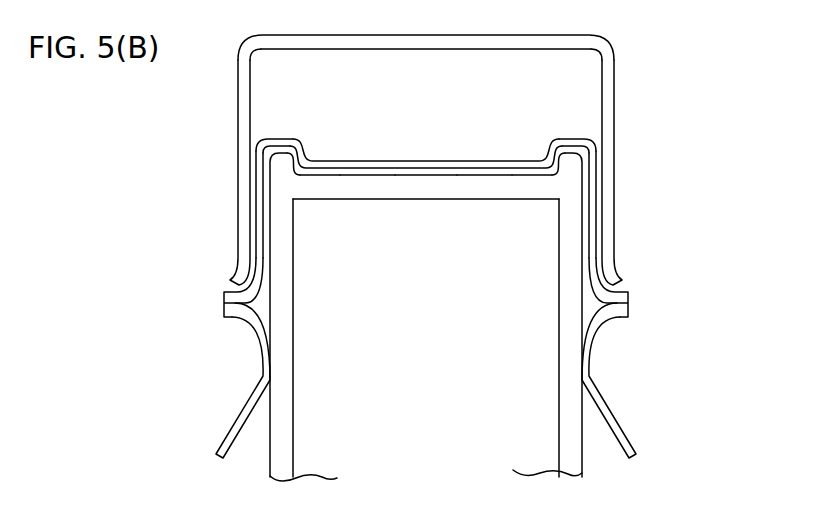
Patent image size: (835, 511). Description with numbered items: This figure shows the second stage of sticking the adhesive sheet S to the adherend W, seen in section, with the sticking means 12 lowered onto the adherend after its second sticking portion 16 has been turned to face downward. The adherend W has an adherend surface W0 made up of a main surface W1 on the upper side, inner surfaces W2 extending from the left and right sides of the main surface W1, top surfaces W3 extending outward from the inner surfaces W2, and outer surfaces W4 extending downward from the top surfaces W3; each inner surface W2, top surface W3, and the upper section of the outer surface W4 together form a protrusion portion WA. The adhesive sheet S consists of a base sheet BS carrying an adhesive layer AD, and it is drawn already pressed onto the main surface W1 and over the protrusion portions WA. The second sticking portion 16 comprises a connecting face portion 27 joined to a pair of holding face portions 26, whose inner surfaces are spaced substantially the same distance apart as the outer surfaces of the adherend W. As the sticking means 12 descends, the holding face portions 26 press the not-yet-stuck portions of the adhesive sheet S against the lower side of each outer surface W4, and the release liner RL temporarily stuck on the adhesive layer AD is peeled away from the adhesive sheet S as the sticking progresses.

The sticking means 12 is at (238, 93).
The second sticking portion 16 is at (614, 72).
The connecting face portion 27 is at (433, 51).
The holding face portion 26 is at (238, 241).
The adherend W is at (453, 302).
The adherend surface W0 is at (435, 167).
The main surface W1 is at (371, 177).
The inner surface W2 is at (307, 165).
The top surface W3 is at (315, 133).
The outer surface W4 is at (273, 246).
The protrusion portion WA is at (277, 163).
The adhesive sheet S is at (377, 198).
The base sheet BS is at (260, 193).
The adhesive layer AD is at (266, 225).
The release liner RL is at (265, 380).